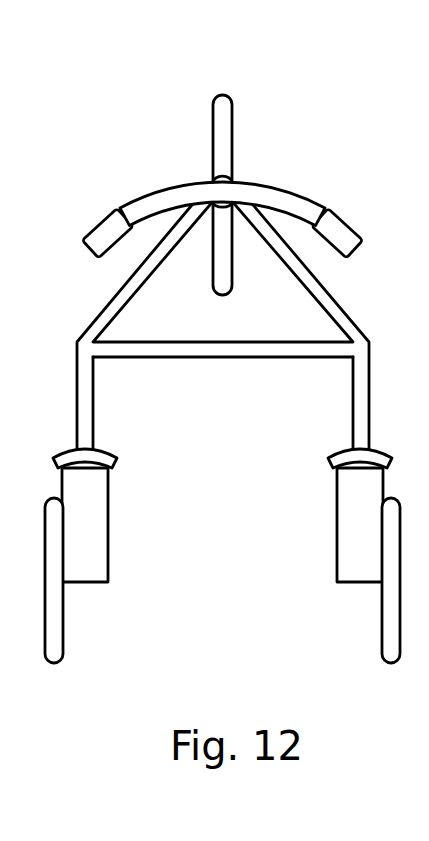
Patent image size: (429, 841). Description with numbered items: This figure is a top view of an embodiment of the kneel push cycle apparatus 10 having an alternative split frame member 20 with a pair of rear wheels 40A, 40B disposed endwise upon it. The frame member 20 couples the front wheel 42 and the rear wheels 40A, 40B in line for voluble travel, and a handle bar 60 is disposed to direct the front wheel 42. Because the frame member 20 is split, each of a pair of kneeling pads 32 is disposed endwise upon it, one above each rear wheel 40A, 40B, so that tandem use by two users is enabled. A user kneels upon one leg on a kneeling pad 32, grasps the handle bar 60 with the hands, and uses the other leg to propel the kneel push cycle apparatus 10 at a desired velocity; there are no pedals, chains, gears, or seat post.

The kneel push cycle apparatus 10 is at (326, 100).
The frame member 20 is at (108, 318).
The kneeling pad 32 is at (97, 529).
The rear wheel 40A is at (65, 632).
The rear wheel 40B is at (383, 632).
The front wheel 42 is at (220, 127).
The handle bar 60 is at (165, 202).